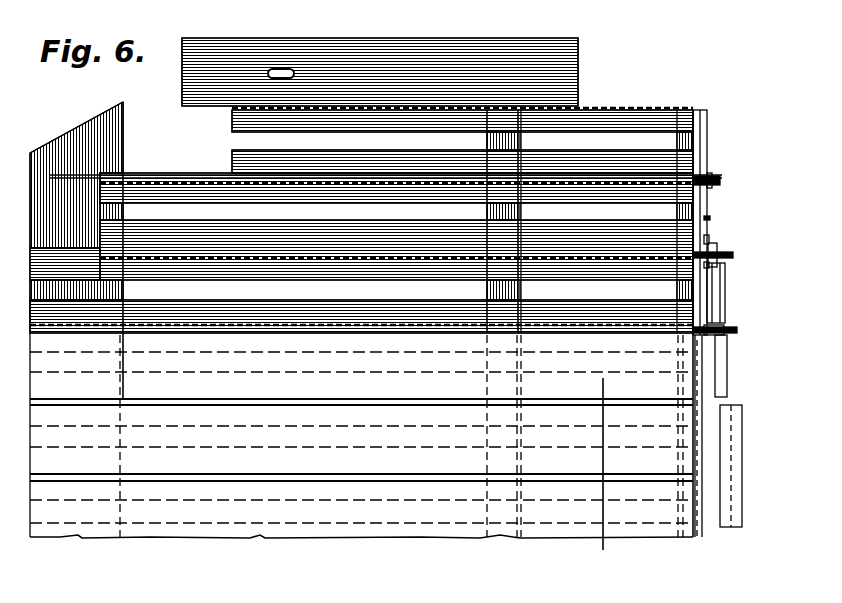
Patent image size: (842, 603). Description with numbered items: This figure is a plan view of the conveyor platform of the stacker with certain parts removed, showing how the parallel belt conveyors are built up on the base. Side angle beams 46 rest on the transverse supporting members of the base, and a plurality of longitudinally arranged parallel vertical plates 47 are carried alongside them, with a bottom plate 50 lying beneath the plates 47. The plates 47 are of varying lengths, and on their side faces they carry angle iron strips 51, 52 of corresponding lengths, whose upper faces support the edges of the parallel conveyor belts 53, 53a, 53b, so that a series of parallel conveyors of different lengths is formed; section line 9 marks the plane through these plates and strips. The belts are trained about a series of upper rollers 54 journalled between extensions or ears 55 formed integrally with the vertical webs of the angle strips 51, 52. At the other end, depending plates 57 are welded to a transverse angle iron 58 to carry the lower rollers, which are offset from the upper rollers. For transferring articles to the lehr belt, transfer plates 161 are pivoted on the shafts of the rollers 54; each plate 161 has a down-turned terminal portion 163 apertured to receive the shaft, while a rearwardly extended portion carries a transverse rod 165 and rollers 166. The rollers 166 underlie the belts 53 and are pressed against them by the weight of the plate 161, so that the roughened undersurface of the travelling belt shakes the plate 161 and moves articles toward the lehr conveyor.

The side angle beam 46 is at (241, 49).
The bottom plate 50 is at (103, 145).
The vertical plate 47 is at (537, 180).
The angle iron strip 51 is at (170, 545).
The angle iron strip 52 is at (623, 200).
The conveyor belt 53 is at (652, 532).
The conveyor belt 53a is at (360, 486).
The conveyor belt 53b is at (322, 368).
The section line 9 is at (603, 466).
The transverse angle iron 58 is at (698, 142).
The extension or ear 55 is at (720, 177).
The depending plate 57 is at (710, 218).
The roller 166 is at (708, 238).
The upper roller 54 is at (723, 288).
The transverse rod 165 is at (722, 296).
The down-turned terminal portion 163 is at (724, 331).
The transfer plate 161 is at (737, 455).